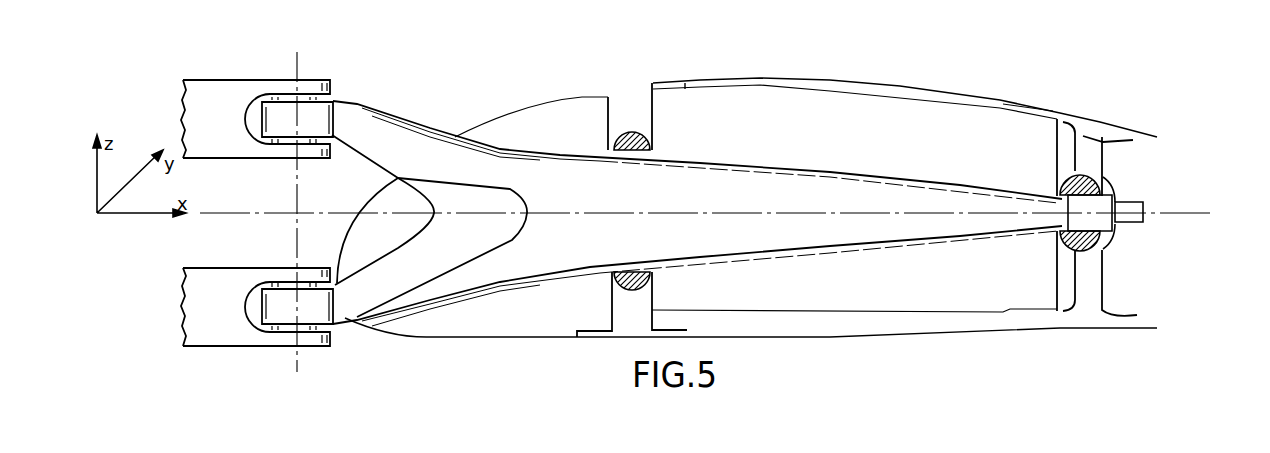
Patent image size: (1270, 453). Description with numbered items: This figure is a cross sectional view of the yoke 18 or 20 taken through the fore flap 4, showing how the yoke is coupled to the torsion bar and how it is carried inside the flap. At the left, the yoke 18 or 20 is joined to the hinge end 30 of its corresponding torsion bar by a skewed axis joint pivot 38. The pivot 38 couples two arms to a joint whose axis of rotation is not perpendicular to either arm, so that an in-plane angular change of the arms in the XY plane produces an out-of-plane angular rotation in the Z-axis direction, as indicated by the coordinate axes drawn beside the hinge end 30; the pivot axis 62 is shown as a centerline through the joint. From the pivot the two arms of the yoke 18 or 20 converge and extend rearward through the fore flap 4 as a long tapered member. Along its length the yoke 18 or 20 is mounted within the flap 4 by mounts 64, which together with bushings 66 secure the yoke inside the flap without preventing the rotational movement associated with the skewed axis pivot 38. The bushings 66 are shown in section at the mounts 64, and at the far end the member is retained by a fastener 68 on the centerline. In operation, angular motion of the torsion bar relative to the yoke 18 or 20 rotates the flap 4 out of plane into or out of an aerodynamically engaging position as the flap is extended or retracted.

The fore flap 4 is at (877, 80).
The yoke 18 is at (697, 199).
The yoke 20 is at (543, 170).
The hinge end 30 is at (220, 79).
The skewed axis joint pivot 38 is at (328, 80).
The pivot axis 62 is at (296, 79).
The mounts 64 is at (628, 112).
The bushings 66 is at (653, 138).
The axle bolt 68 is at (1130, 228).